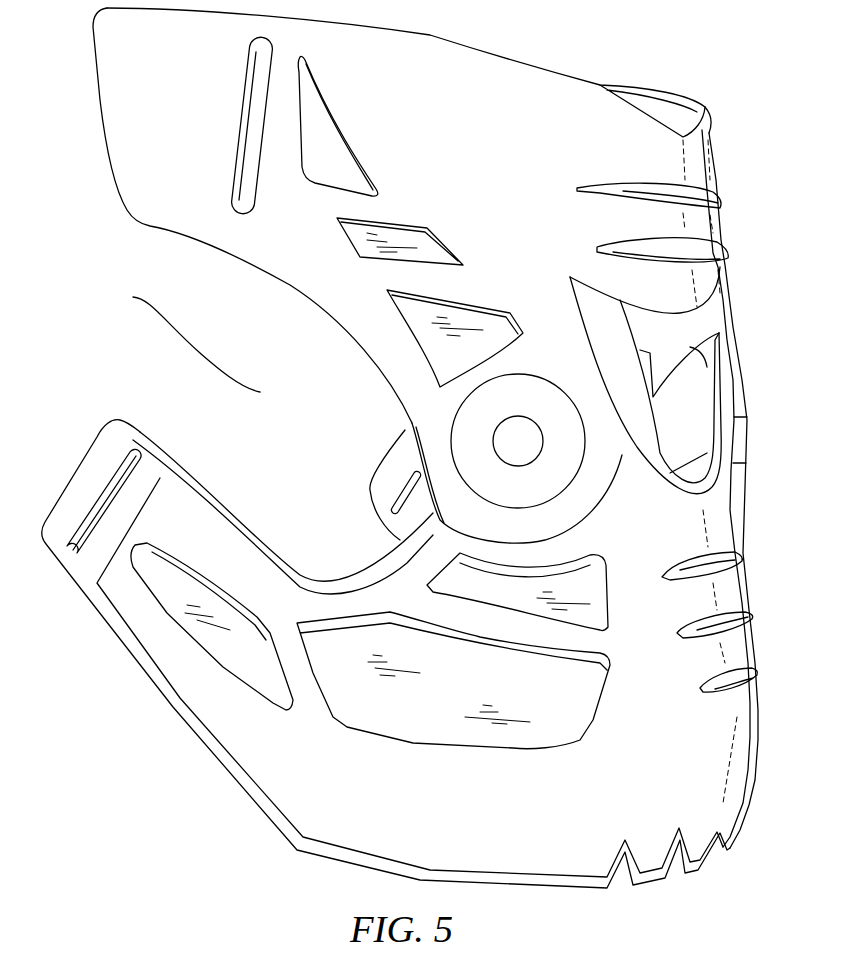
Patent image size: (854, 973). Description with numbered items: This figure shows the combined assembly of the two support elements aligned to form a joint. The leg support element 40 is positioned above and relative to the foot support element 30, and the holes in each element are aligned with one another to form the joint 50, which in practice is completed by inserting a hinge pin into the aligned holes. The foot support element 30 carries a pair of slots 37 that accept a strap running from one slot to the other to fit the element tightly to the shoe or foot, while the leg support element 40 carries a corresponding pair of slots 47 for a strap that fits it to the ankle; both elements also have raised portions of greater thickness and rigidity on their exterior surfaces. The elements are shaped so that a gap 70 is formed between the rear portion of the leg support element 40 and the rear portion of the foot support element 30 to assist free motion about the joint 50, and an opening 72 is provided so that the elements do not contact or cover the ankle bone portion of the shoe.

The foot support element 30 is at (152, 622).
The slots 37 is at (120, 485).
The leg support element 40 is at (120, 95).
The slots 47 is at (248, 148).
The joint 50 is at (507, 432).
The gap 70 is at (623, 363).
The opening 72 is at (133, 297).